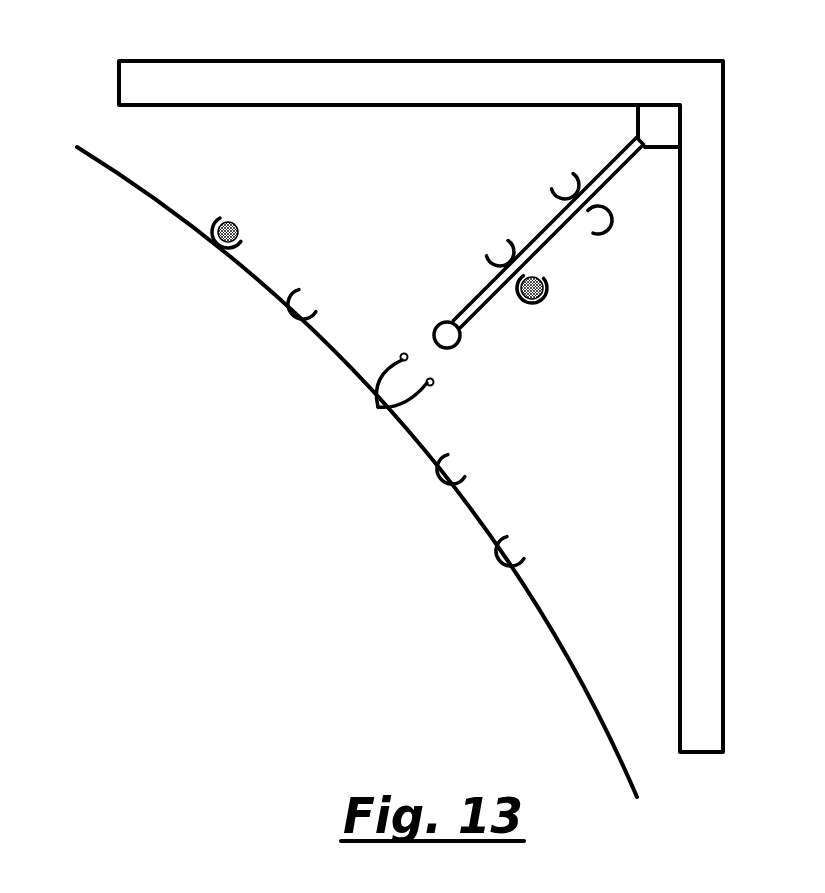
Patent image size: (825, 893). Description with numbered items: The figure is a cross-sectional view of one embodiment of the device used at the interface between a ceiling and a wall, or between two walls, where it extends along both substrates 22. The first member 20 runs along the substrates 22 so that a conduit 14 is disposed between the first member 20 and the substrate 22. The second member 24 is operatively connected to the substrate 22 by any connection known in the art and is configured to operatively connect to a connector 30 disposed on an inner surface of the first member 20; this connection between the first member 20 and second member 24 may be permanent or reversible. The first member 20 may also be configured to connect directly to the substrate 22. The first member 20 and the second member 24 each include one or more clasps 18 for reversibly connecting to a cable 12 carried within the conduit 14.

The cable 12 is at (240, 226).
The conduit 14 is at (643, 290).
The clasp 18 is at (500, 267).
The first member 20 is at (573, 687).
The substrate 22 is at (700, 90).
The second member 24 is at (620, 178).
The connector 30 is at (377, 388).